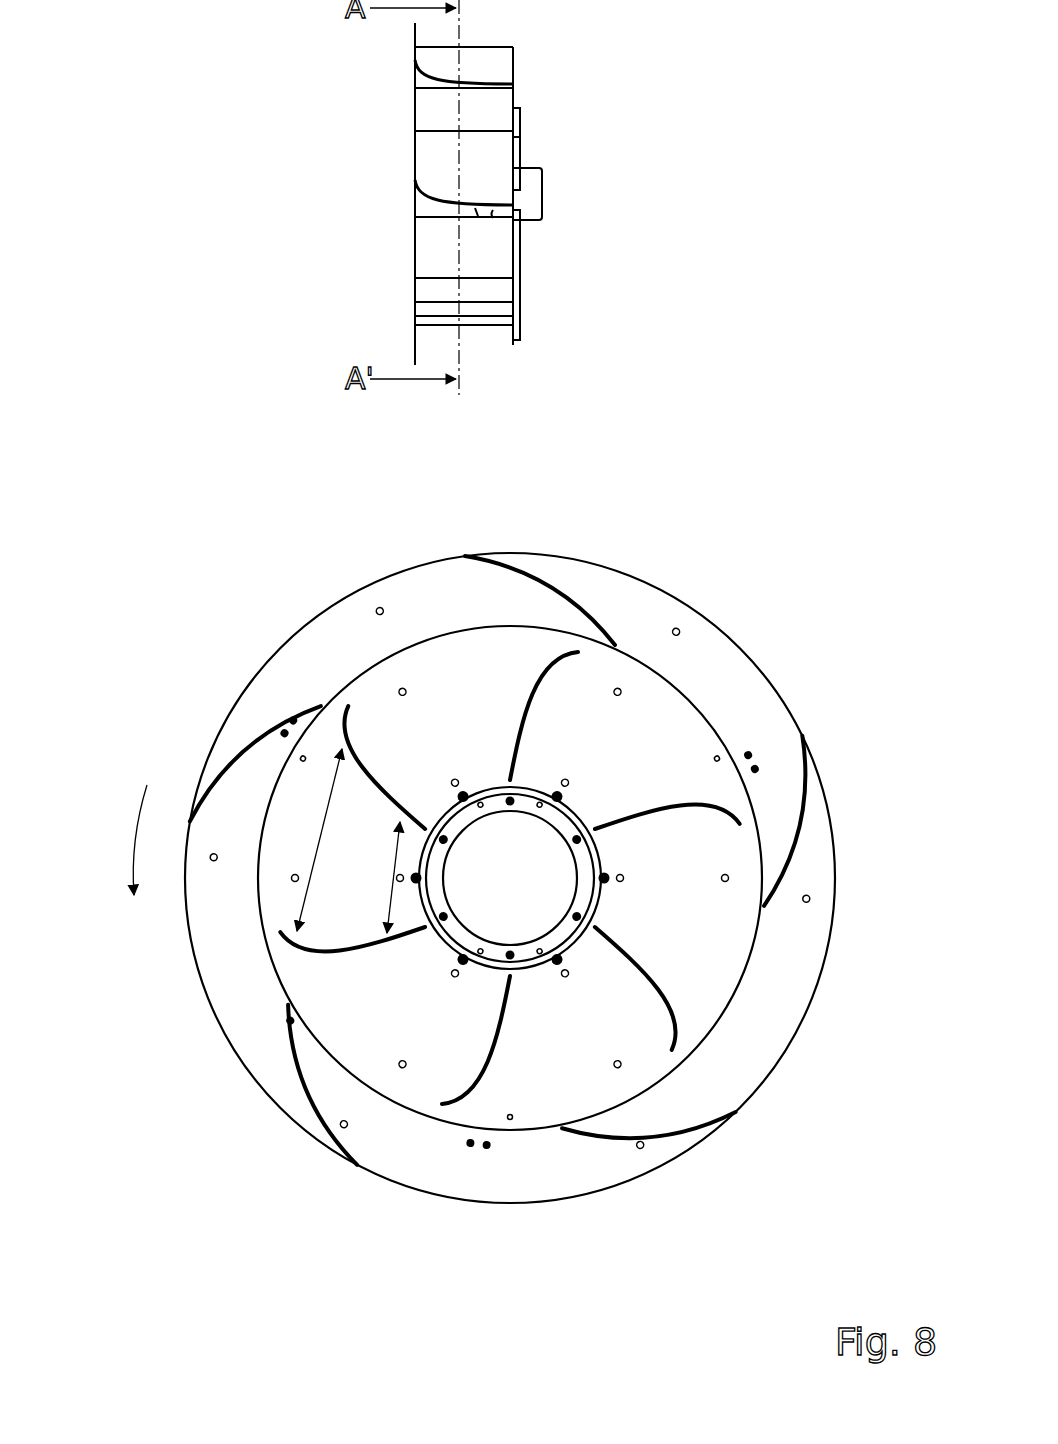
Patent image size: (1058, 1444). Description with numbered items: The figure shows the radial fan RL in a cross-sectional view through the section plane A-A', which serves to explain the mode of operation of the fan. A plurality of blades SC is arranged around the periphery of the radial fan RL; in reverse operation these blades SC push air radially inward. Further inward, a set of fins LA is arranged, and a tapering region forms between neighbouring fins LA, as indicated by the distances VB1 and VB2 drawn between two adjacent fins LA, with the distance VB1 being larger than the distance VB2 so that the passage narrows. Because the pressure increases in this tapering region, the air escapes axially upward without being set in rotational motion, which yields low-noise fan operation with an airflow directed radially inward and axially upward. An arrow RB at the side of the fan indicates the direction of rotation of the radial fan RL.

The radial fan RL is at (592, 150).
The blades SC is at (563, 585).
The fins LA is at (380, 787).
The distance VB1 is at (307, 892).
The distance VB2 is at (383, 897).
The direction of rotation RB is at (135, 852).